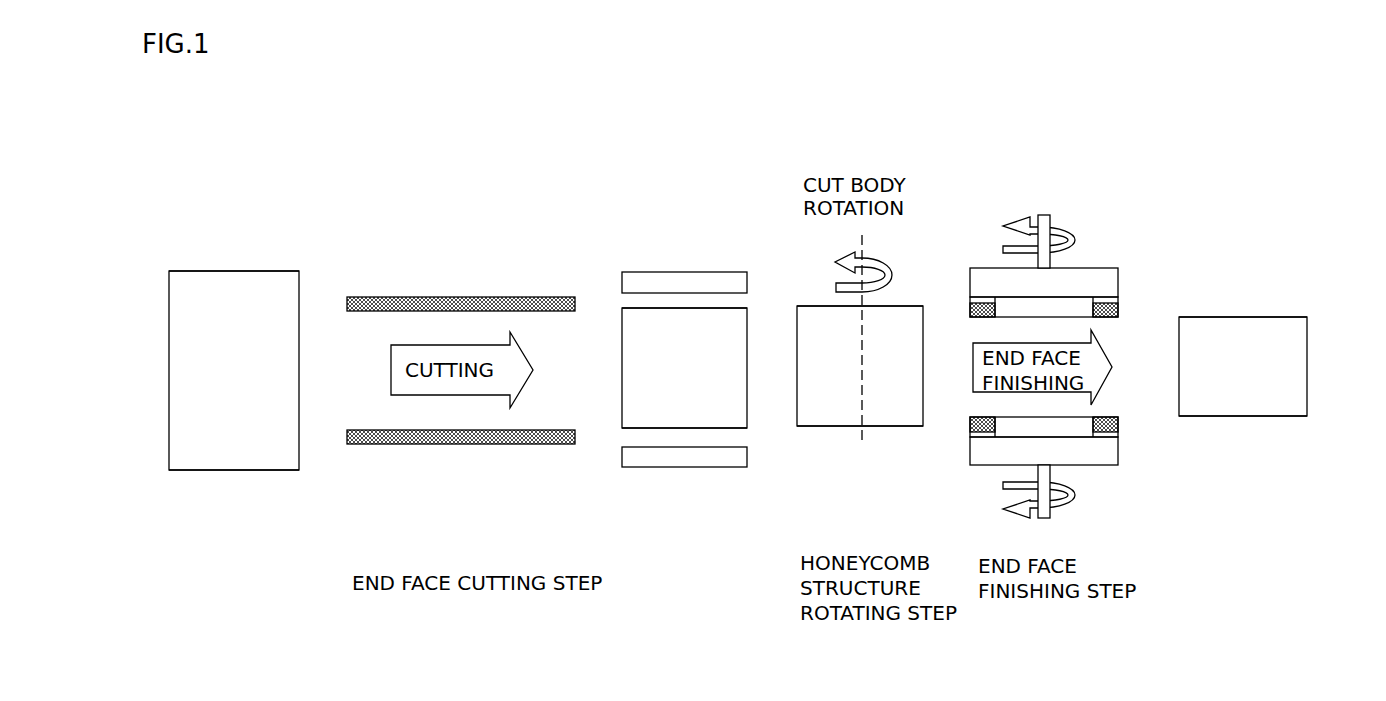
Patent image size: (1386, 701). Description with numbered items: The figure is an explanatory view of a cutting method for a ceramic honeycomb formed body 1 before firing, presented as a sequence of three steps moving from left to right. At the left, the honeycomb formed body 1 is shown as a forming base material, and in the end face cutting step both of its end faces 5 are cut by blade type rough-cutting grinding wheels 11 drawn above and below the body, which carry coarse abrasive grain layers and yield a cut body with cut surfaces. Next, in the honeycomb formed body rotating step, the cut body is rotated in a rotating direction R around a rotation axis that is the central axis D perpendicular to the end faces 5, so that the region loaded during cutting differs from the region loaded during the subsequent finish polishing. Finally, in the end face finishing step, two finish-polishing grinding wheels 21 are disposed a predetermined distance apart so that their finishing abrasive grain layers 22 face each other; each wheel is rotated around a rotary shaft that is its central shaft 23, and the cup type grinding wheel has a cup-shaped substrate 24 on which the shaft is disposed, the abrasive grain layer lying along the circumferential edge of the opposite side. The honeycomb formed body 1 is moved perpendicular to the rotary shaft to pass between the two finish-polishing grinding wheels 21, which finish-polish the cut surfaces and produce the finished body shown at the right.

The honeycomb formed body 1 is at (273, 280).
The end face 5 is at (205, 271).
The blade type rough-cutting grinding wheel 11 is at (565, 302).
The finish-polishing grinding wheel 21 is at (1106, 270).
The finishing abrasive grain layer 22 is at (1115, 310).
The central shaft 23 is at (1043, 245).
The cup-shaped substrate 24 is at (1105, 278).
The rotating direction R is at (892, 273).
The central axis D is at (862, 343).